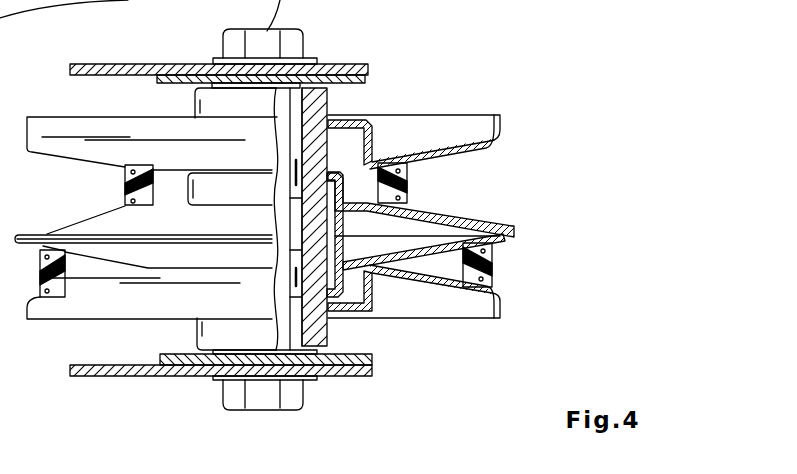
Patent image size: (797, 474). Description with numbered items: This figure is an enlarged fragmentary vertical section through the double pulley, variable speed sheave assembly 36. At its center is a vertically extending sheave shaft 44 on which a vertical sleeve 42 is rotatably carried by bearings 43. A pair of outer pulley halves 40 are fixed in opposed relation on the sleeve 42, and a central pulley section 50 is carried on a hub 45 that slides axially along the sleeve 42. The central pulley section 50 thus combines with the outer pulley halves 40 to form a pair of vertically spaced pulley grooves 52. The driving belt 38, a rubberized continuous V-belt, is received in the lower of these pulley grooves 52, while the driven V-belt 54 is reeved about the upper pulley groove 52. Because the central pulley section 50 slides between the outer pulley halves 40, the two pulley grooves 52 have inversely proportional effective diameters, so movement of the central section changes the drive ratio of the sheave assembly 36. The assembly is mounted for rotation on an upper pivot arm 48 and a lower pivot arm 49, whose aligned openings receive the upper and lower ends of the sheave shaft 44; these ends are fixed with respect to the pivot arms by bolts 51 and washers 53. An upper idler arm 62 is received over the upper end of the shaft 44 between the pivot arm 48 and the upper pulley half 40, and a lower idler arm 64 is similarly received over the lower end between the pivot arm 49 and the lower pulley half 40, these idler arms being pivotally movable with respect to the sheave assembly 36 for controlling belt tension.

The variable speed sheave assembly 36 is at (560, 197).
The driving belt 38 is at (494, 276).
The outer pulley halves 40 is at (478, 130).
The vertical sleeve 42 is at (330, 156).
The bearings 43 is at (293, 182).
The sheave shaft 44 is at (283, 112).
The hub 45 is at (335, 225).
The upper pivot arm 48 is at (126, 66).
The lower pivot arm 49 is at (132, 377).
The central pulley section 50 is at (27, 233).
The bolts 51 is at (298, 401).
The pulley grooves 52 is at (510, 163).
The washers 53 is at (213, 59).
The driven V-belt 54 is at (408, 188).
The upper idler arm 62 is at (178, 84).
The lower idler arm 64 is at (166, 353).